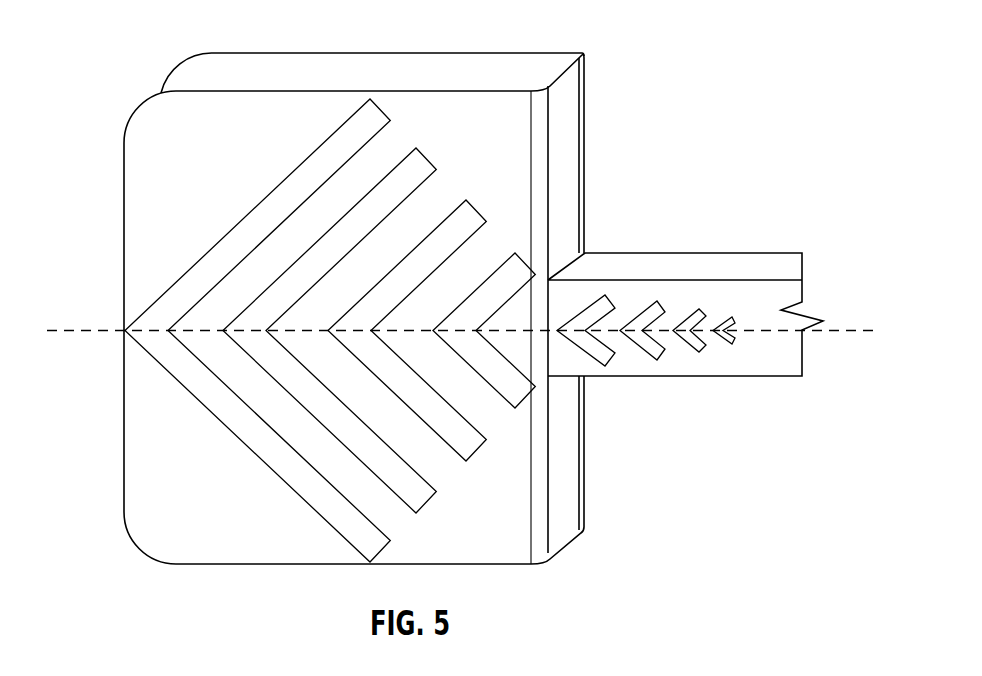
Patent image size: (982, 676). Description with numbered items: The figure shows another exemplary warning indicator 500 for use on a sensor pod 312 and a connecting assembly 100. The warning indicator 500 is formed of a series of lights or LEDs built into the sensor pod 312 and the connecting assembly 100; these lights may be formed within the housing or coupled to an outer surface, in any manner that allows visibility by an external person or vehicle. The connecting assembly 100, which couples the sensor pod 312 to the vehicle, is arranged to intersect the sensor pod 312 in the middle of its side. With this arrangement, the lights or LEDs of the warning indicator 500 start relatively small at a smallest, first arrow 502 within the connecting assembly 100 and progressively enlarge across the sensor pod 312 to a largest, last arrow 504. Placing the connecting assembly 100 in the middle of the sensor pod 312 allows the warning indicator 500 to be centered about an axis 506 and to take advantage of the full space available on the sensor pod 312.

The sensor pod 312 is at (159, 47).
The warning indicator 500 is at (330, 330).
The last arrow 504 is at (225, 233).
The connecting assembly 100 is at (698, 241).
The first arrow 502 is at (732, 357).
The axis 506 is at (840, 328).